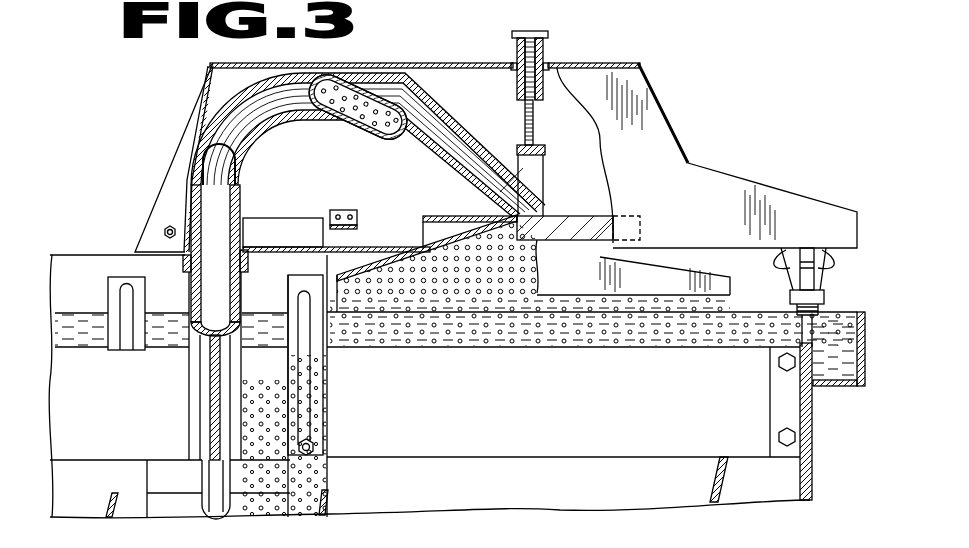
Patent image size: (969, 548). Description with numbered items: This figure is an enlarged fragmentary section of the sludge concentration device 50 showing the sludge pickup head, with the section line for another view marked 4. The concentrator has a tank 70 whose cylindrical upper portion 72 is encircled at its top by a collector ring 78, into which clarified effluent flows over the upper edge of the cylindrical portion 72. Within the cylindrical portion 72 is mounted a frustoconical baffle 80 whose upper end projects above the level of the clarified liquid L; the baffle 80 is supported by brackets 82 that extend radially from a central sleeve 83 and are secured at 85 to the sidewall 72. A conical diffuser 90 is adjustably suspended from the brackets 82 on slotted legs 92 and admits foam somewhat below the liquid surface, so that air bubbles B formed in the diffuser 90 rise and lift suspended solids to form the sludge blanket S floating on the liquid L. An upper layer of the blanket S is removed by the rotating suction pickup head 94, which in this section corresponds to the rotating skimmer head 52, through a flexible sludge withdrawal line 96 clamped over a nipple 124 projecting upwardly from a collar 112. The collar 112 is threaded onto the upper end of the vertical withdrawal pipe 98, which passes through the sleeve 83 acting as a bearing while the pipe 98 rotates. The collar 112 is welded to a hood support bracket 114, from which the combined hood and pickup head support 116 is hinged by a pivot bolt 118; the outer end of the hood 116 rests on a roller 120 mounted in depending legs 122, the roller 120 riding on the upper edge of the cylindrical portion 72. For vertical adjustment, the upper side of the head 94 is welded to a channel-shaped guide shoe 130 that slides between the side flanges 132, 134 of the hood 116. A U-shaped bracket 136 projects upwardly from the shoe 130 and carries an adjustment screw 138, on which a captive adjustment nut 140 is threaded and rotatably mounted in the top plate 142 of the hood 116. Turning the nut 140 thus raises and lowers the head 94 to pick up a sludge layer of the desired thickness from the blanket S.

The sludge concentration device 50 is at (743, 82).
The rotating skimmer head 52 is at (653, 260).
The tank 70 is at (503, 508).
The cylindrical upper portion 72 is at (812, 480).
The collector ring 78 is at (870, 373).
The frustoconical baffle 80 is at (722, 480).
The brackets 82 is at (112, 422).
The central sleeve 83 is at (193, 363).
The bracket securing points 85 is at (795, 437).
The conical diffuser 90 is at (330, 497).
The slotted legs 92 is at (108, 287).
The rotating suction pickup head 94 is at (380, 267).
The flexible sludge withdrawal line 96 is at (350, 118).
The vertical withdrawal pipe 98 is at (207, 503).
The collar 112 is at (233, 247).
The hood support bracket 114 is at (305, 217).
The combined hood and pickup head support 116 is at (653, 77).
The pivot bolt 118 is at (164, 232).
The roller 120 is at (807, 285).
The depending legs 122 is at (842, 257).
The nipple 124 is at (230, 187).
The channel-shaped guide shoe 130 is at (452, 216).
The side flange 132 is at (445, 72).
The side flange 134 is at (662, 123).
The U-shaped bracket 136 is at (570, 147).
The adjustment screw 138 is at (533, 113).
The captive adjustment nut 140 is at (550, 35).
The top plate 142 is at (208, 71).
The sludge blanket S is at (345, 103).
The clarified liquid L is at (80, 336).
The air bubbles B is at (255, 498).
The section line 4 is at (103, 205).